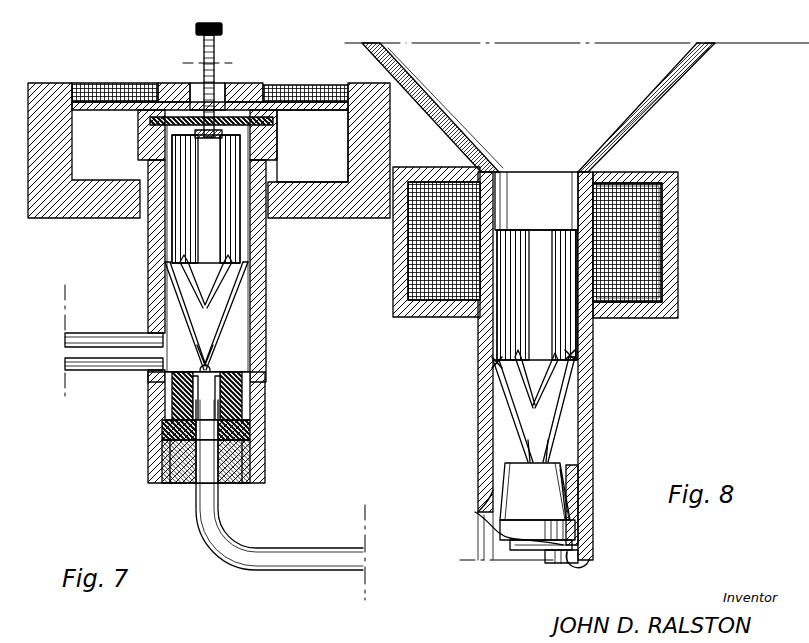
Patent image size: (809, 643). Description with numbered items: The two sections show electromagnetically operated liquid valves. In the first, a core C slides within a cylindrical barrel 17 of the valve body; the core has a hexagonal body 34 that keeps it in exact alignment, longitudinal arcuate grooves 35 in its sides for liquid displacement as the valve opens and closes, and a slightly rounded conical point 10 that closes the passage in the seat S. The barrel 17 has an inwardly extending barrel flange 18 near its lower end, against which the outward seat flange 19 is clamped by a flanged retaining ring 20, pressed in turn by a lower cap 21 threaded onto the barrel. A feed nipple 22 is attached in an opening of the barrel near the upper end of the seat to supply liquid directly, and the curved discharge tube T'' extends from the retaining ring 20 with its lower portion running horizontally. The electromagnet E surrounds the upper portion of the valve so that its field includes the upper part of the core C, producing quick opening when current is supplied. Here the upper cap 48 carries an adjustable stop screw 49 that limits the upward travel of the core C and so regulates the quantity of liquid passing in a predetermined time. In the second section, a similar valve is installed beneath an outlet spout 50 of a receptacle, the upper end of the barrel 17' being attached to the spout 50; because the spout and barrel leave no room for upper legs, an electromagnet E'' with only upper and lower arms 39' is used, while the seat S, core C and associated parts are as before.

In FIG. 7, the electromagnet E is at (209, 133).
In FIG. 7, the stop screw 49 is at (214, 84).
In FIG. 7, the upper cap 48 is at (277, 123).
In FIG. 7, the cylindrical barrel 17 is at (221, 246).
In FIG. 7, the core C is at (206, 199).
In FIG. 8, the core C is at (536, 266).
In FIG. 7, the body 34 is at (205, 250).
In FIG. 8, the body 34 is at (497, 362).
In FIG. 7, the grooves 35 is at (180, 280).
In FIG. 8, the grooves 35 is at (498, 363).
In FIG. 7, the conical point 10 is at (205, 348).
In FIG. 8, the conical point 10 is at (537, 442).
In FIG. 7, the seat S is at (237, 375).
In FIG. 8, the seat S is at (535, 491).
In FIG. 7, the barrel flange 18 is at (245, 413).
In FIG. 8, the barrel flange 18 is at (577, 512).
In FIG. 7, the seat flange 19 is at (247, 427).
In FIG. 8, the seat flange 19 is at (572, 527).
In FIG. 7, the retaining ring 20 is at (245, 452).
In FIG. 8, the retaining ring 20 is at (572, 543).
In FIG. 7, the lower cap 21 is at (258, 477).
In FIG. 8, the lower cap 21 is at (585, 560).
In FIG. 7, the curved discharge tube T'' is at (280, 500).
In FIG. 7, the feed nipple 22 is at (120, 360).
In FIG. 8, the outlet spout 50 is at (683, 105).
In FIG. 8, the upper and lower arms 39' is at (547, 241).
In FIG. 8, the electromagnet E'' is at (663, 242).
In FIG. 8, the barrel 17' is at (553, 366).